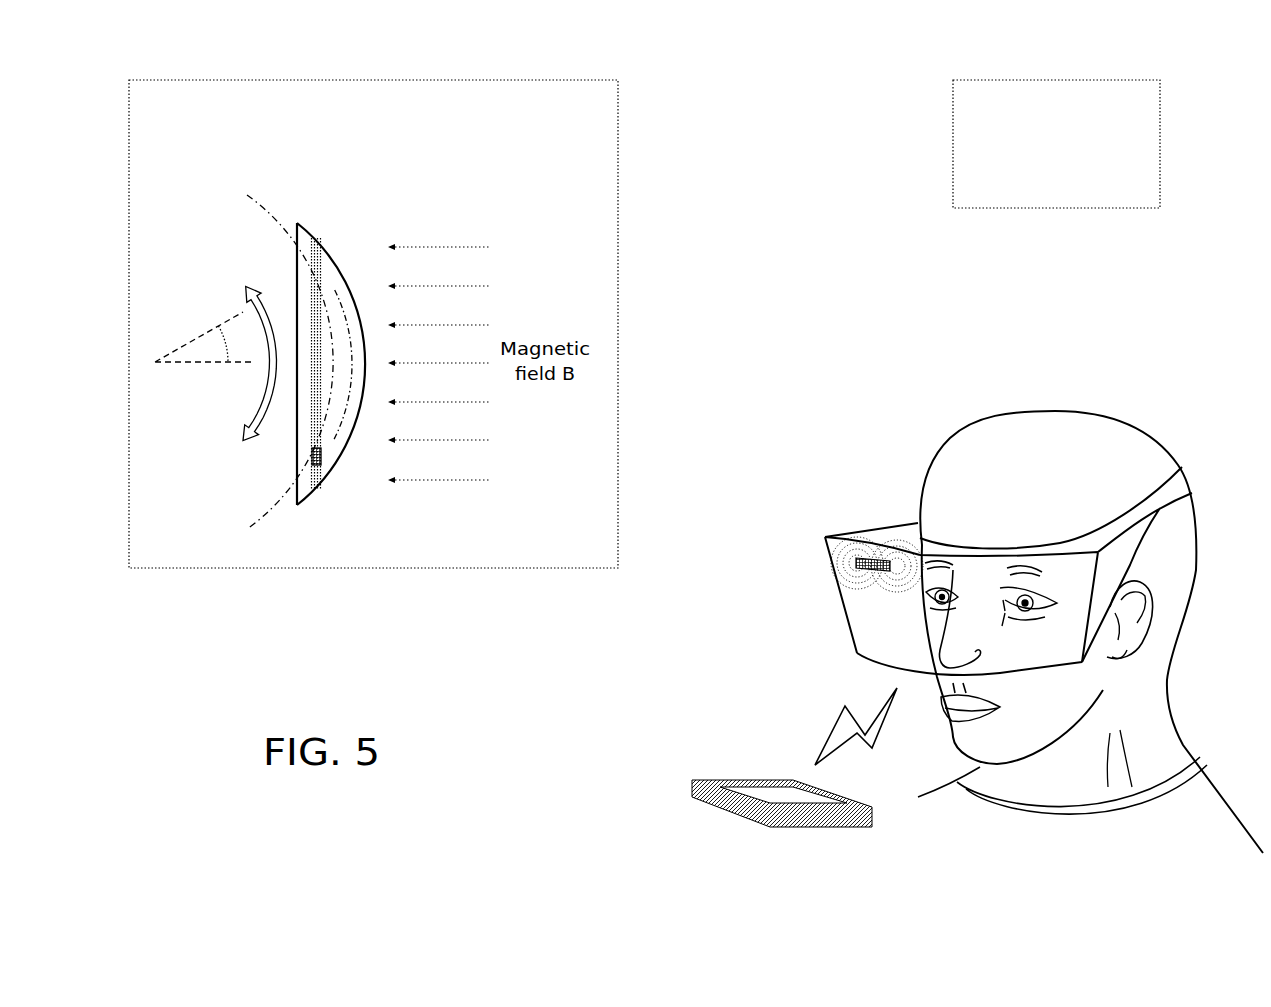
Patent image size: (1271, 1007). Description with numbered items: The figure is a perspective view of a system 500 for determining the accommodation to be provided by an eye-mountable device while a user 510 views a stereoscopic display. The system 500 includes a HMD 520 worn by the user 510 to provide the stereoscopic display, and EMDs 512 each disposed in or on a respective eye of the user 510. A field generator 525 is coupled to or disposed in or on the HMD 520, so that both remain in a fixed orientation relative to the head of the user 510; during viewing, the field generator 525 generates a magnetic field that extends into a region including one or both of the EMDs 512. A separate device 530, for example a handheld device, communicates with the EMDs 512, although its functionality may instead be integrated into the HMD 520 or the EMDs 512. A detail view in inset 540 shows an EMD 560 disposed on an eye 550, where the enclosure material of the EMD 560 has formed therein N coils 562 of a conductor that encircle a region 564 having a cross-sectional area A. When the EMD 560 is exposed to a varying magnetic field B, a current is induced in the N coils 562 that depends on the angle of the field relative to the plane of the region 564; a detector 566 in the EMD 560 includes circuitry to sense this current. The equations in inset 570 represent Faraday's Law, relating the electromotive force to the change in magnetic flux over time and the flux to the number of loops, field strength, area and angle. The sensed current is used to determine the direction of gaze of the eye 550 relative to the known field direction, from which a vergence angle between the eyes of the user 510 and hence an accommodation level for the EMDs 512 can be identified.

The system 500 is at (942, 389).
The user 510 is at (1090, 632).
The EMDs 512 is at (921, 598).
The HMD 520 is at (840, 608).
The field generator 525 is at (877, 541).
The device 530 is at (750, 767).
The inset 540 is at (555, 78).
The eye 550 is at (244, 362).
The EMD 560 is at (297, 457).
The N coils 562 is at (320, 237).
The region 564 is at (342, 268).
The detector 566 is at (317, 467).
The inset 570 is at (1097, 78).